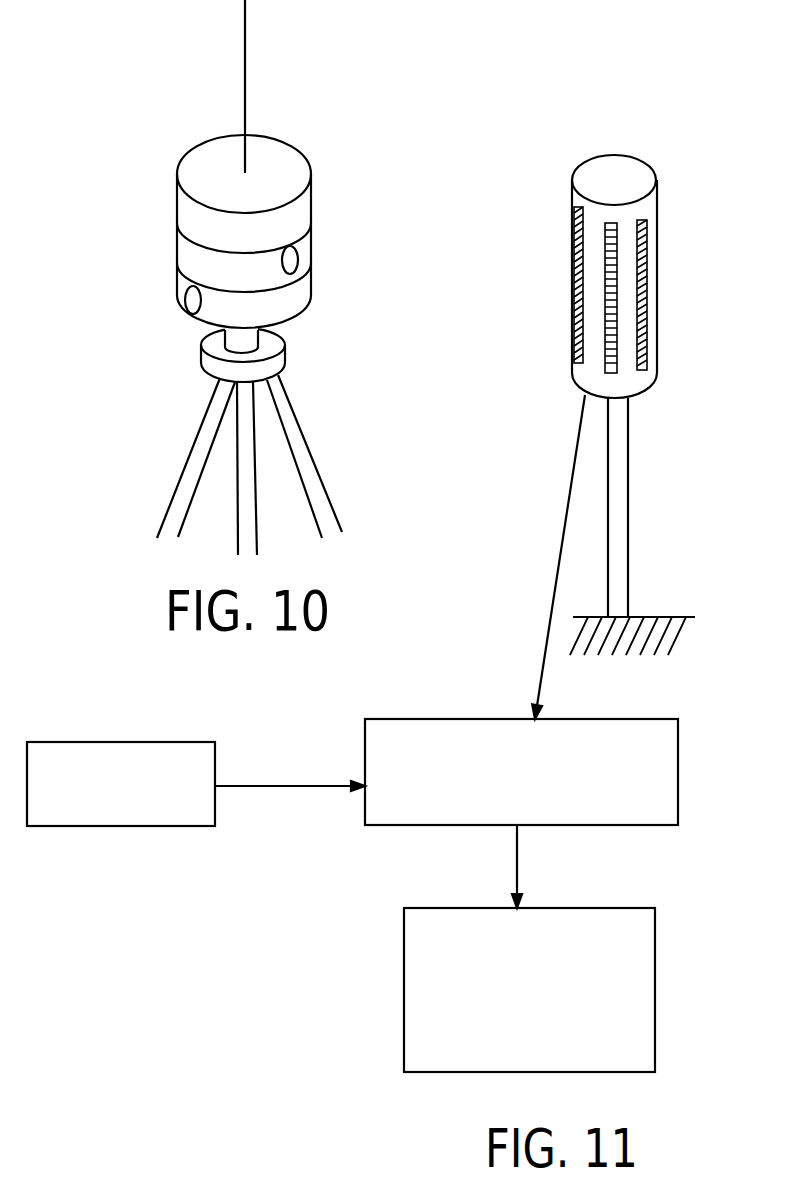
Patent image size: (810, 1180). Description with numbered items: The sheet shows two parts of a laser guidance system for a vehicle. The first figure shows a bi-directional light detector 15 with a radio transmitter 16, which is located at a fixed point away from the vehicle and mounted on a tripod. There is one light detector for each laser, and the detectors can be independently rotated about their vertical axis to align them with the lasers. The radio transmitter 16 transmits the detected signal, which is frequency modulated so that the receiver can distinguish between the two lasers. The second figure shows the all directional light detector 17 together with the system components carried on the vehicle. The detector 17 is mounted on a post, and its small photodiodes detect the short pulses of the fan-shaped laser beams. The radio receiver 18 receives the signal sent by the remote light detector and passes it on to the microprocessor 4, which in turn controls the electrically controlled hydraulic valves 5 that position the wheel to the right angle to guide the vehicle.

In FIG. 10, the radio transmitter 16 is at (311, 197).
In FIG. 10, the bi-directional light detector 15 is at (311, 265).
In FIG. 11, the all directional light detector 17 is at (657, 268).
In FIG. 11, the microprocessor 4 is at (678, 772).
In FIG. 11, the electrically controlled hydraulic valves 5 is at (655, 989).
In FIG. 11, the radio receiver 18 is at (145, 826).